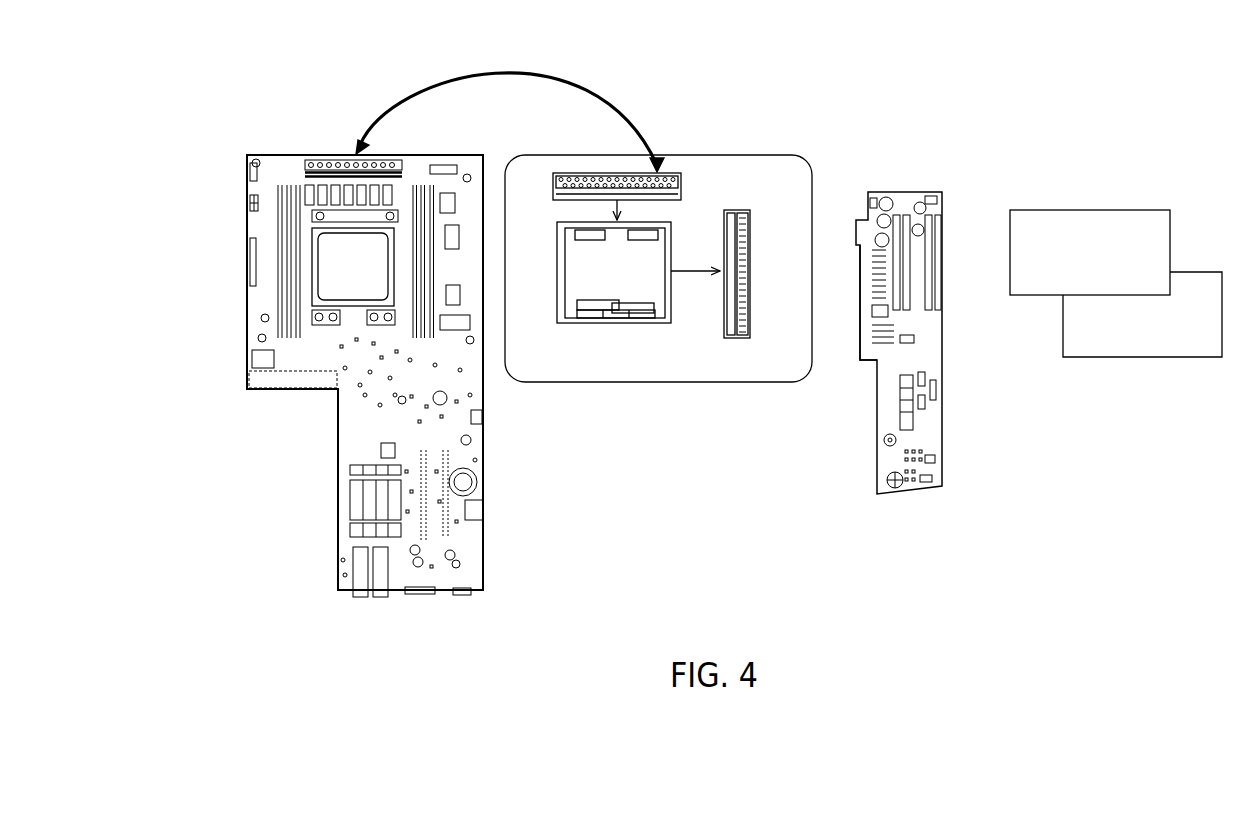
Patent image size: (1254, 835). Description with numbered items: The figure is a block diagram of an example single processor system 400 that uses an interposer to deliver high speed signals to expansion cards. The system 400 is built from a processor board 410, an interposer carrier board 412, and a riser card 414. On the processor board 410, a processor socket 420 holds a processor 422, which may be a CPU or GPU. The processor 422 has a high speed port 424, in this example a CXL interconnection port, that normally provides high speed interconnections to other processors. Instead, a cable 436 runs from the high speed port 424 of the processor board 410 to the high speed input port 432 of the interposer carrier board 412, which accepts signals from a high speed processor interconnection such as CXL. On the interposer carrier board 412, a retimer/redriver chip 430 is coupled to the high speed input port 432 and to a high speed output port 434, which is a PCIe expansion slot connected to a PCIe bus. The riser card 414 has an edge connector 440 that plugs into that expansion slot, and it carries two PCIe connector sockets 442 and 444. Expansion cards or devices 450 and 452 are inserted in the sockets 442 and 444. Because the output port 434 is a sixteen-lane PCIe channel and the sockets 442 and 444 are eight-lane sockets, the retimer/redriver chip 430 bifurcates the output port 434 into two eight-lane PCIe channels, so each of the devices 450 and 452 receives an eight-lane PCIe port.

The single processor system 400 is at (248, 50).
The processor board 410 is at (277, 390).
The interposer carrier board 412 is at (780, 156).
The riser card 414 is at (930, 483).
The processor socket 420 is at (352, 230).
The processor 422 is at (318, 262).
The high speed port 424 is at (343, 158).
The retimer/redriver chip 430 is at (672, 247).
The high speed input port 432 is at (588, 170).
The high speed output port 434 is at (753, 225).
The cable 436 is at (434, 80).
The edge connector 440 is at (867, 355).
The PCIe connector socket 442 is at (943, 280).
The PCIe connector socket 444 is at (908, 230).
The expansion card or device 450 is at (1090, 210).
The expansion card or device 452 is at (1143, 358).